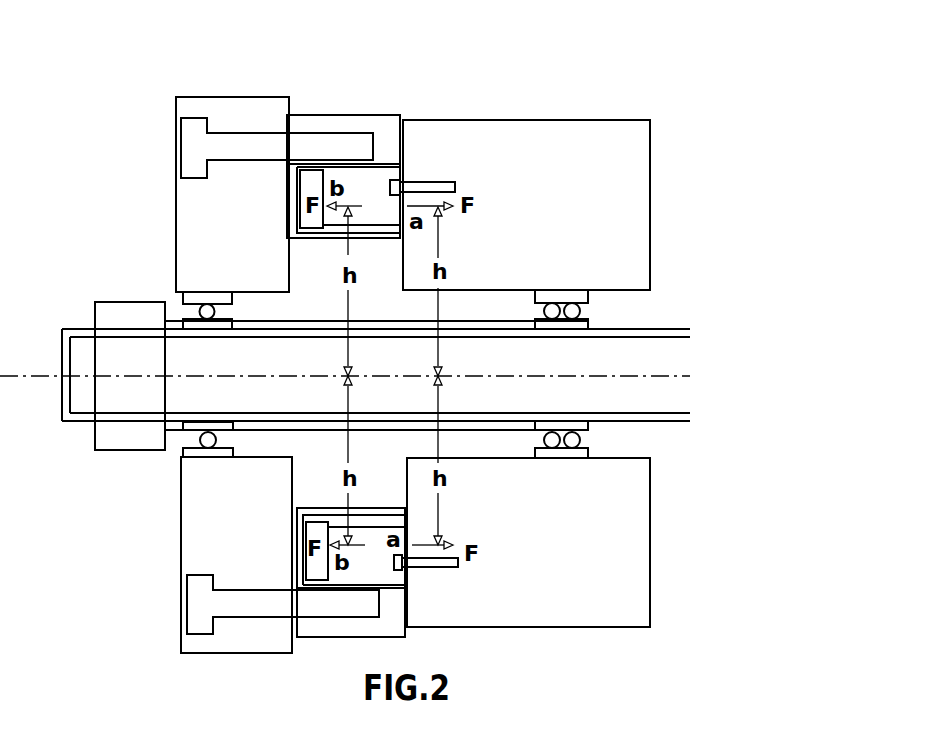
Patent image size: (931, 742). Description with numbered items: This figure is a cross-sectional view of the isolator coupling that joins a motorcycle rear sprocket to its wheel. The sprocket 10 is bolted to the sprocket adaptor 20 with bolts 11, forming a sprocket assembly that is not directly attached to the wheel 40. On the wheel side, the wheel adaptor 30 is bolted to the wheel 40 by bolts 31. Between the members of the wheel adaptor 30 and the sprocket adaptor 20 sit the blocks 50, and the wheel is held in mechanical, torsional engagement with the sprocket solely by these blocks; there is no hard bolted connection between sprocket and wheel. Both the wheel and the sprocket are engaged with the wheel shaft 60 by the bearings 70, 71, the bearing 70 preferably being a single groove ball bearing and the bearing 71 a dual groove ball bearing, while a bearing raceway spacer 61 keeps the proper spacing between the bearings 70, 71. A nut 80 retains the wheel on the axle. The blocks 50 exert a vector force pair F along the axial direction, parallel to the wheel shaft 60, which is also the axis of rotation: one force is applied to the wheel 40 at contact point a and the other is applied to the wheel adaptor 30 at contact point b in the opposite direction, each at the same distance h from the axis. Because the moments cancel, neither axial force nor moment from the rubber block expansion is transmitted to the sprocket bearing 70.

The sprocket 10 is at (176, 222).
The bolts 11 is at (197, 152).
The sprocket adaptor 20 is at (355, 115).
The wheel adaptor 30 is at (333, 222).
The bolts 31 is at (448, 181).
The wheel 40 is at (617, 120).
The blocks 50 is at (374, 516).
The wheel shaft 60 is at (543, 367).
The bearing raceway spacer 61 is at (448, 431).
The bearing 70 is at (183, 298).
The bearing 71 is at (590, 447).
The nut 80 is at (127, 452).